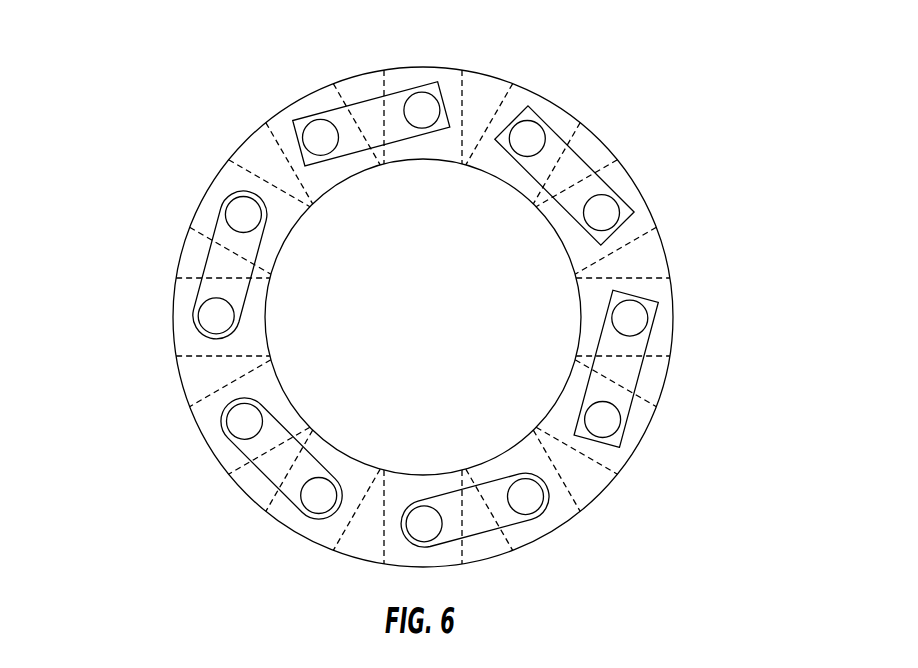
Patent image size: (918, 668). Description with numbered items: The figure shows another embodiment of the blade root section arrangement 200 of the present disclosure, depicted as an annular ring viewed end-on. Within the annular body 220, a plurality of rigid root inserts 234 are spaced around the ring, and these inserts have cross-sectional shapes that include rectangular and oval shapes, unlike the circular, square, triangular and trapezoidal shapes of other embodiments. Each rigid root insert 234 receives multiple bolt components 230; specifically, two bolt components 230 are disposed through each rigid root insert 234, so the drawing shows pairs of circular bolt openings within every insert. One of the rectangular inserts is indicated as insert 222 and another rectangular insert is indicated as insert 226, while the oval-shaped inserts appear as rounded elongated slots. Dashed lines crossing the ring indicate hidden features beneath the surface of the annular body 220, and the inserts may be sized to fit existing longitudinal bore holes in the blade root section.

The backing plate 200 is at (671, 96).
The annular body 220 is at (652, 420).
The mounting slot 222 is at (574, 371).
The mounting pad 226 is at (615, 178).
The bolt components 230 is at (420, 103).
The rigid root inserts 234 is at (223, 227).